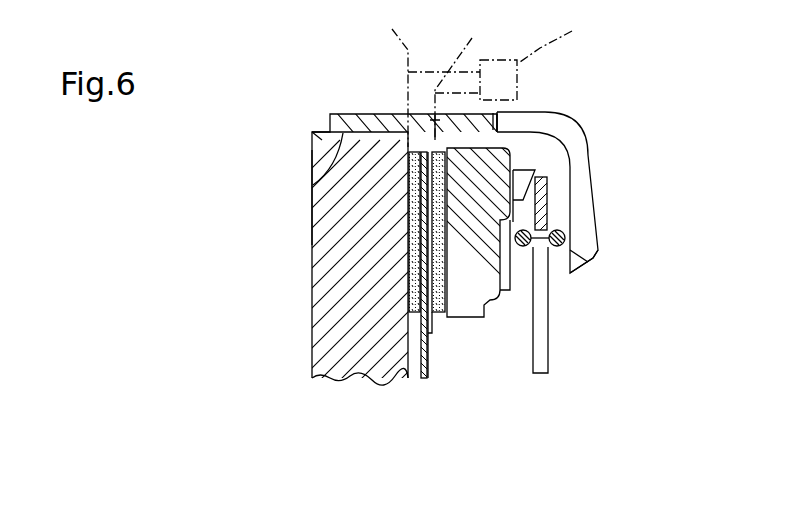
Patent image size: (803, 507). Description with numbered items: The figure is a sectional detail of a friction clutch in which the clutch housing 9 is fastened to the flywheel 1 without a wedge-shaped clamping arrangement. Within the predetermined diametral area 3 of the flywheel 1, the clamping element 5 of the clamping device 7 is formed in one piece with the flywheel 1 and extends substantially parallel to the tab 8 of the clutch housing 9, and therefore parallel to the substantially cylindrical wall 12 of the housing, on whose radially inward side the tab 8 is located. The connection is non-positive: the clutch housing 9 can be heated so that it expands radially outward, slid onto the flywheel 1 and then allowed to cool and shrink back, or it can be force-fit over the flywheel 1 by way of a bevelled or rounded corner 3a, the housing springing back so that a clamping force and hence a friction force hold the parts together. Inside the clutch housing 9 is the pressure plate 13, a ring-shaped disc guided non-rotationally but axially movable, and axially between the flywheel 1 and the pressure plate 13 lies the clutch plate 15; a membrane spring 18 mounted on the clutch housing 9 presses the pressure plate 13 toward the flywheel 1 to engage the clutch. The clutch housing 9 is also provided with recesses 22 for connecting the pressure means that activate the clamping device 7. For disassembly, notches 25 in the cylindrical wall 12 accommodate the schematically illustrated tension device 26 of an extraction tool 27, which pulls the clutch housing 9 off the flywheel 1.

The flywheel 1 is at (325, 333).
The diametral area 3 is at (317, 183).
The bevelled or rounded corner 3a is at (318, 228).
The clamping element 5 is at (318, 149).
The clamping device 7 is at (322, 132).
The tab 8 is at (377, 127).
The clutch housing 9 is at (583, 270).
The cylindrical wall 12 is at (497, 117).
The pressure plate 13 is at (503, 171).
The clutch plate 15 is at (433, 337).
The membrane spring 18 is at (543, 350).
The recesses 22 is at (560, 132).
The notches 25 is at (461, 72).
The tension device 26 is at (423, 74).
The extraction tool 27 is at (539, 54).